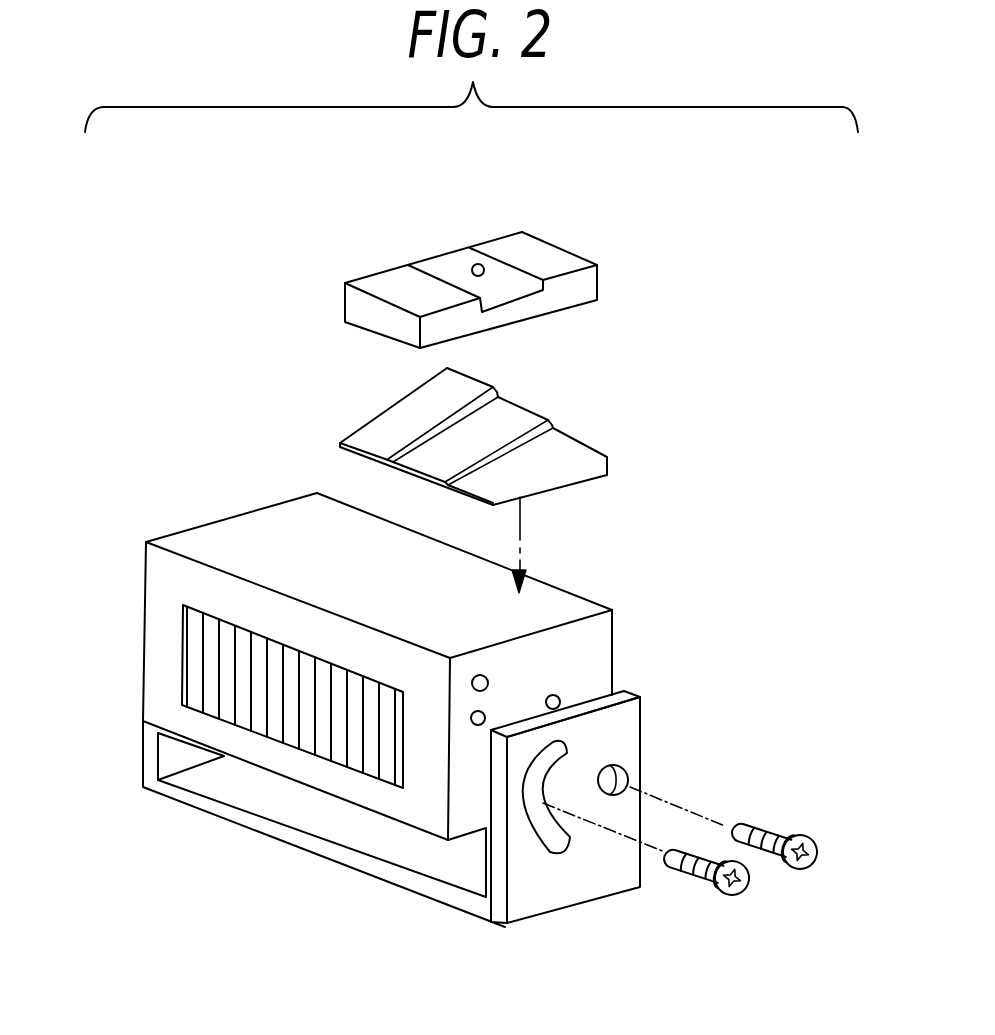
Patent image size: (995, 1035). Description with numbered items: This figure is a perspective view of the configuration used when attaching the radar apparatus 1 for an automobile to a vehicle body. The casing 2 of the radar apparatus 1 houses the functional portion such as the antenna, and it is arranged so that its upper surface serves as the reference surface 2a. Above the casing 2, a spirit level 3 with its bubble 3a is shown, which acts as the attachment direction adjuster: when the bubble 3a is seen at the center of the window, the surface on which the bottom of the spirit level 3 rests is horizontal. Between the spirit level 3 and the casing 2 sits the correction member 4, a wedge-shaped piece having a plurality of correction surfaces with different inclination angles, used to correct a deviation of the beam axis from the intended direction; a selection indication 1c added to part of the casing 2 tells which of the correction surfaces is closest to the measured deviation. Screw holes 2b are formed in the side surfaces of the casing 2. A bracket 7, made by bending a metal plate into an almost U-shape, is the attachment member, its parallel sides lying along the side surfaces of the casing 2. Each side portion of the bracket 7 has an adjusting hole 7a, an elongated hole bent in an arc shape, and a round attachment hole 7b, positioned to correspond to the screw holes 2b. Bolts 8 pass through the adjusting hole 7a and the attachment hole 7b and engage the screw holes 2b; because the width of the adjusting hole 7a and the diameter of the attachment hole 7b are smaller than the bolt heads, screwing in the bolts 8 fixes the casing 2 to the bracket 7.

The radar apparatus for an automobile 1 is at (230, 402).
The selection indication 1c is at (477, 675).
The casing 2 is at (374, 710).
The reference surface 2a is at (588, 584).
The screw holes 2b is at (484, 711).
The spirit level 3 is at (516, 266).
The bubble 3a is at (472, 265).
The correction member 4 is at (548, 447).
The bracket 7 is at (619, 824).
The adjusting hole 7a is at (562, 845).
The attachment hole 7b is at (627, 768).
The bolts 8 is at (800, 870).